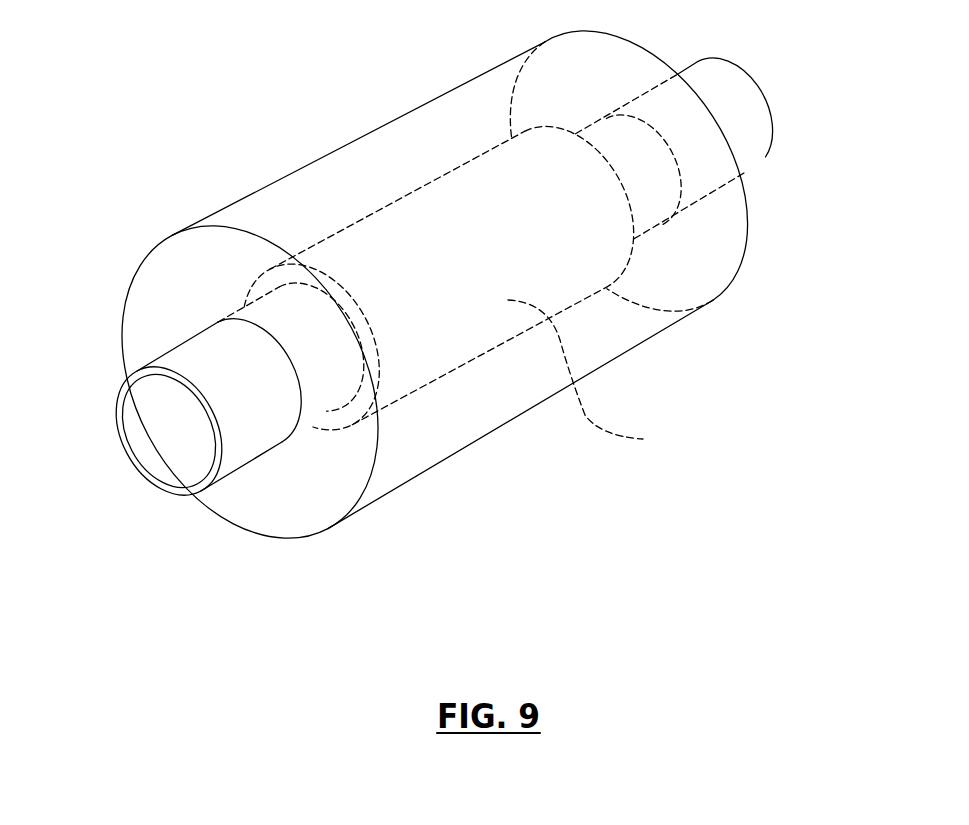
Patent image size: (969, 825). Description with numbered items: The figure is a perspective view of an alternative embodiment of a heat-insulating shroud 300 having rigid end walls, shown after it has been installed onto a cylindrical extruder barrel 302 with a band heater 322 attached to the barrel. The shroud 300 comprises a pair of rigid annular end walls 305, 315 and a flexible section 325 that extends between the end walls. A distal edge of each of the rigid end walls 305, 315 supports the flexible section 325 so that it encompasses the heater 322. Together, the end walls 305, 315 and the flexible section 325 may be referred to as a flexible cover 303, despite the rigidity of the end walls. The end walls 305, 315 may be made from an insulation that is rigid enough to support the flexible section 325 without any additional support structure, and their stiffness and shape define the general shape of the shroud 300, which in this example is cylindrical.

The heat-insulating shroud 300 is at (254, 131).
The extruder barrel 302 is at (189, 358).
The flexible cover 303 is at (492, 459).
The rigid annular end wall 305 is at (288, 504).
The rigid annular end wall 315 is at (717, 255).
The band heater 322 is at (601, 379).
The flexible section 325 is at (438, 130).